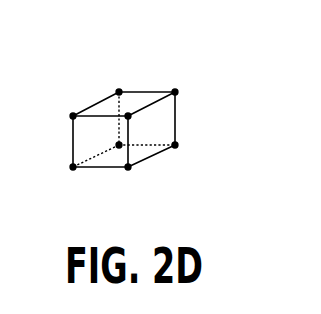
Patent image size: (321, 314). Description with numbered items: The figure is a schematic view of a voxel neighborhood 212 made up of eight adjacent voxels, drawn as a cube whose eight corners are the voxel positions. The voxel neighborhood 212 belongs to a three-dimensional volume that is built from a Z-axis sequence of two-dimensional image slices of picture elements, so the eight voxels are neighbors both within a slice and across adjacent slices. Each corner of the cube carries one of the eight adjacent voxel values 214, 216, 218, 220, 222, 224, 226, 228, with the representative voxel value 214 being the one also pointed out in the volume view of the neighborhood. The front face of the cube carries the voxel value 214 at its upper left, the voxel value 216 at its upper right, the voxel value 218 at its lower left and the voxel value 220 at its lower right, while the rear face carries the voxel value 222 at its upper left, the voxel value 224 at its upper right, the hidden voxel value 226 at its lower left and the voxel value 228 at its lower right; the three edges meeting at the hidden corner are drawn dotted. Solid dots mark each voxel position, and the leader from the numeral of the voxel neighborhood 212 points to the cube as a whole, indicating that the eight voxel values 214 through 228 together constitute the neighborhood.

The voxel neighborhood 212 is at (153, 130).
The voxel value 214 is at (73, 116).
The voxel value 216 is at (128, 116).
The voxel value 218 is at (73, 167).
The voxel value 220 is at (128, 167).
The voxel value 222 is at (119, 92).
The voxel value 224 is at (175, 92).
The voxel value 226 is at (128, 167).
The voxel value 228 is at (175, 145).